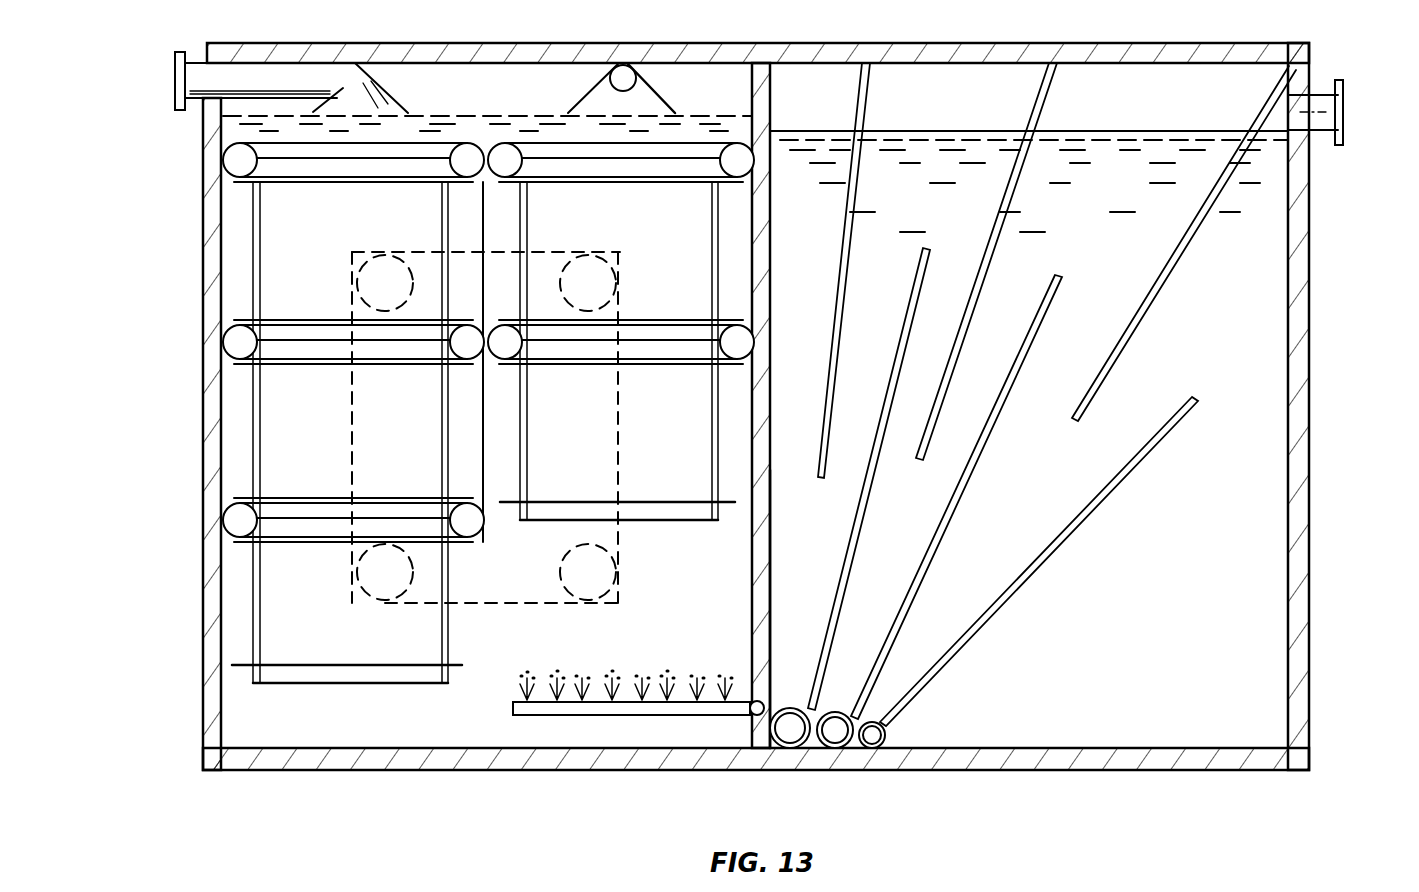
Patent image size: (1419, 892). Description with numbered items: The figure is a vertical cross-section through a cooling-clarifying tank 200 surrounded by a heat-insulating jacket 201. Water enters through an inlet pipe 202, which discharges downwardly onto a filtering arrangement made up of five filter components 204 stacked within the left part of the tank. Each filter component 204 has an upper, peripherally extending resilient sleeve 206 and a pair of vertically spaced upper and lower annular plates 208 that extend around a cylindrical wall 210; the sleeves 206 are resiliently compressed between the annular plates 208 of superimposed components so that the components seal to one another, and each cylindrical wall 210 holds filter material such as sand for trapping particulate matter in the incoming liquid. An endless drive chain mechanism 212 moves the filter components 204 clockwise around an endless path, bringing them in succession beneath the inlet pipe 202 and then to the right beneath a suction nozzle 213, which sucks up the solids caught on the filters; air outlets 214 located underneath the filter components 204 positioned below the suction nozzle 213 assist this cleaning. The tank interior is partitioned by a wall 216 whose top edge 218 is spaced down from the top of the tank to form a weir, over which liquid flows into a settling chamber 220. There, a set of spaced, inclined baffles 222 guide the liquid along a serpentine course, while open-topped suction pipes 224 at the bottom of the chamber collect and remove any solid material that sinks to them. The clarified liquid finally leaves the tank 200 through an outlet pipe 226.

The cooling-clarifying tank 200 is at (1340, 484).
The heat-insulating jacket 201 is at (1289, 608).
The inlet pipe 202 is at (303, 78).
The filter components 204 is at (240, 252).
The resilient sleeve 206 is at (242, 160).
The annular plates 208 is at (338, 183).
The cylindrical wall 210 is at (255, 212).
The endless drive chain mechanism 212 is at (613, 264).
The suction nozzle 213 is at (640, 100).
The air outlets 214 is at (513, 712).
The partition wall 216 is at (769, 549).
The top edge 218 is at (772, 108).
The settling chamber 220 is at (1181, 615).
The inclined baffles 222 is at (848, 255).
The suction pipes 224 is at (797, 768).
The outlet pipe 226 is at (1320, 137).